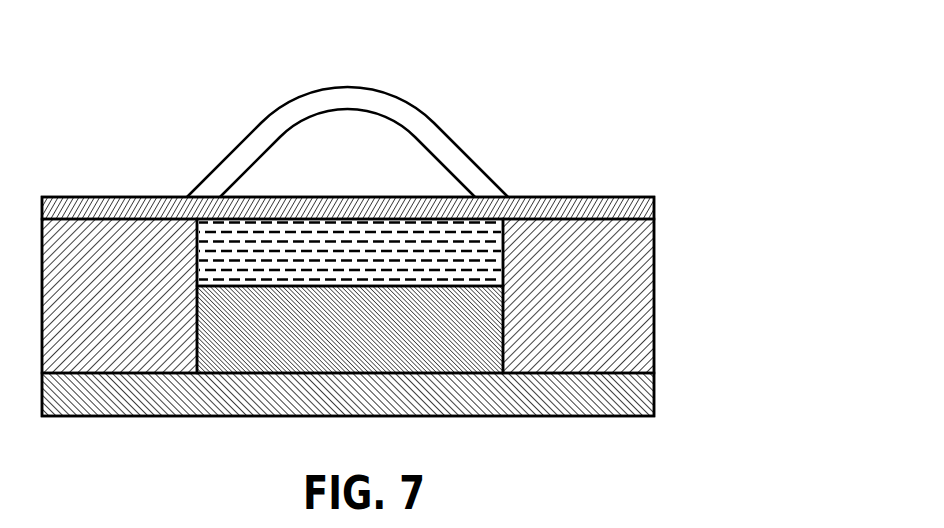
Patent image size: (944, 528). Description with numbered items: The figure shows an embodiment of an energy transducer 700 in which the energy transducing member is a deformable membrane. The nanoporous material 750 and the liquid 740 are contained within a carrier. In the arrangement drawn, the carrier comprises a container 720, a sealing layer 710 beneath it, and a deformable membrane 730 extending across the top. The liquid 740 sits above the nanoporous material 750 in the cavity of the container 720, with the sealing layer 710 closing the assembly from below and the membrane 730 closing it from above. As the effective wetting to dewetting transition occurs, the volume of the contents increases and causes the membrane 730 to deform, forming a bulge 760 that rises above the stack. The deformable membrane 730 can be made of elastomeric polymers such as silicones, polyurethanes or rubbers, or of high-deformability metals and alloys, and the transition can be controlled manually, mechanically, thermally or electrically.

The display device 700 is at (684, 88).
The sealing layer 710 is at (637, 396).
The container 720 is at (637, 317).
The deformable membrane 730 is at (647, 195).
The liquid 740 is at (250, 246).
The nanoporous material 750 is at (247, 342).
The lens 760 is at (449, 135).